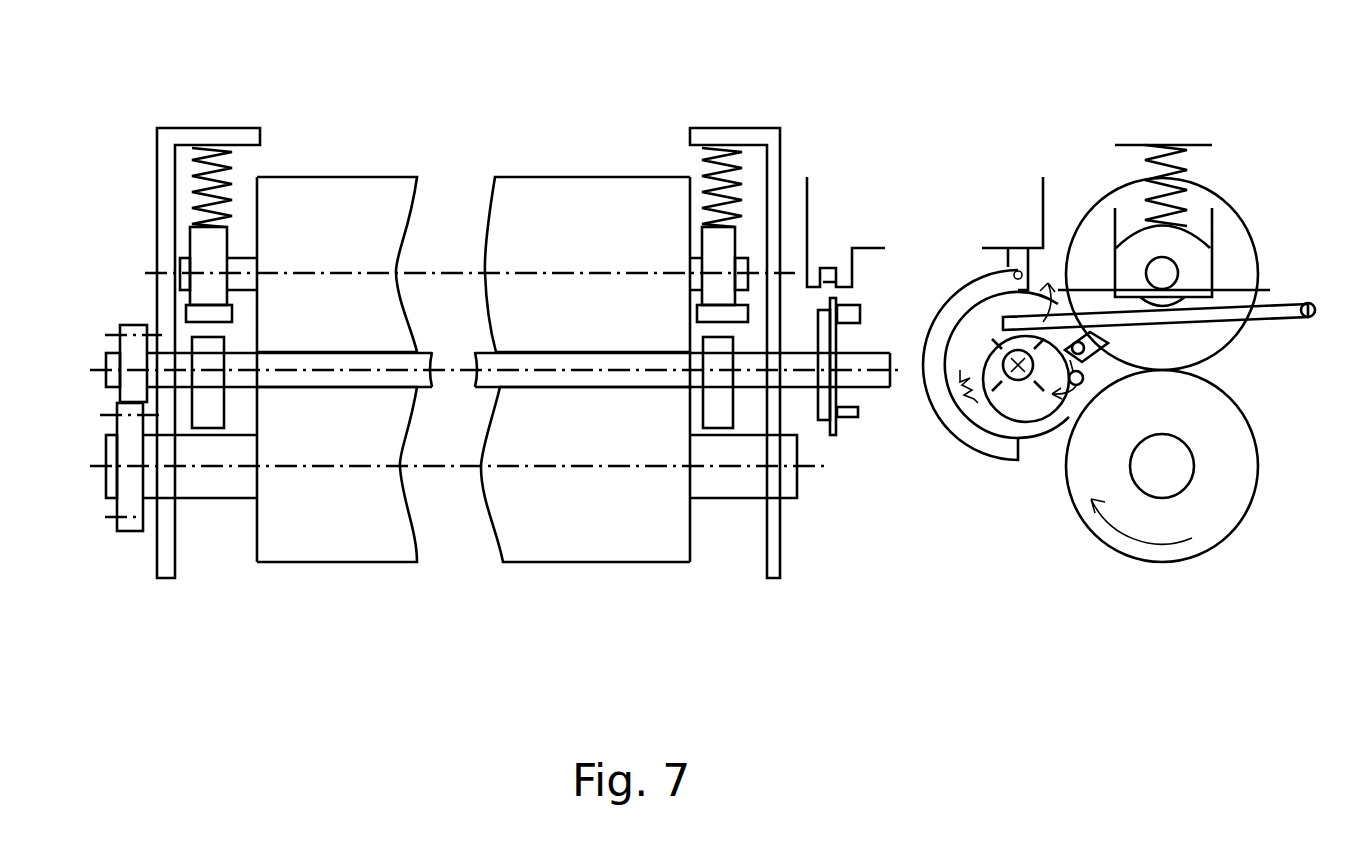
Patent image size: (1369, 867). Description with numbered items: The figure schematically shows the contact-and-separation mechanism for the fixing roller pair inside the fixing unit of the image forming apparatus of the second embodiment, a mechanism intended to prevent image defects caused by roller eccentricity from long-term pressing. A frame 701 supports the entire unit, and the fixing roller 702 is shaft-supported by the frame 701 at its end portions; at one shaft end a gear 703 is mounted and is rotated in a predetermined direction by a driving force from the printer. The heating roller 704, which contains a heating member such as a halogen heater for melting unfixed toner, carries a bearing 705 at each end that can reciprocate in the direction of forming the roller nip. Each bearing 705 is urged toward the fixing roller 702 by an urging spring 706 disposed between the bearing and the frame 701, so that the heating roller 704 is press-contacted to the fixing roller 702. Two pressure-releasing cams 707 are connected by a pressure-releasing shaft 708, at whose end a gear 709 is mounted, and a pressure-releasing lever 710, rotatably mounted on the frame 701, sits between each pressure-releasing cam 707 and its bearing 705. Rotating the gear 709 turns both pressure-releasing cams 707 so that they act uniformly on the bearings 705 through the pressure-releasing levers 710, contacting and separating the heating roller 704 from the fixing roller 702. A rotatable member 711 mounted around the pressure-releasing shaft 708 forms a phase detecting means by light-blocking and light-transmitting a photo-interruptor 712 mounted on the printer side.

The frame 701 is at (180, 563).
The fixing roller 702 is at (587, 543).
The gear 703 is at (128, 515).
The heating roller 704 is at (527, 227).
The bearing 705 is at (203, 243).
The urging spring 706 is at (215, 180).
The pressure-releasing cam 707 is at (207, 400).
The pressure-releasing shaft 708 is at (243, 400).
The gear 709 is at (128, 352).
The pressure-releasing lever 710 is at (213, 317).
The rotatable member 711 is at (835, 415).
The photo-interruptor 712 is at (828, 257).